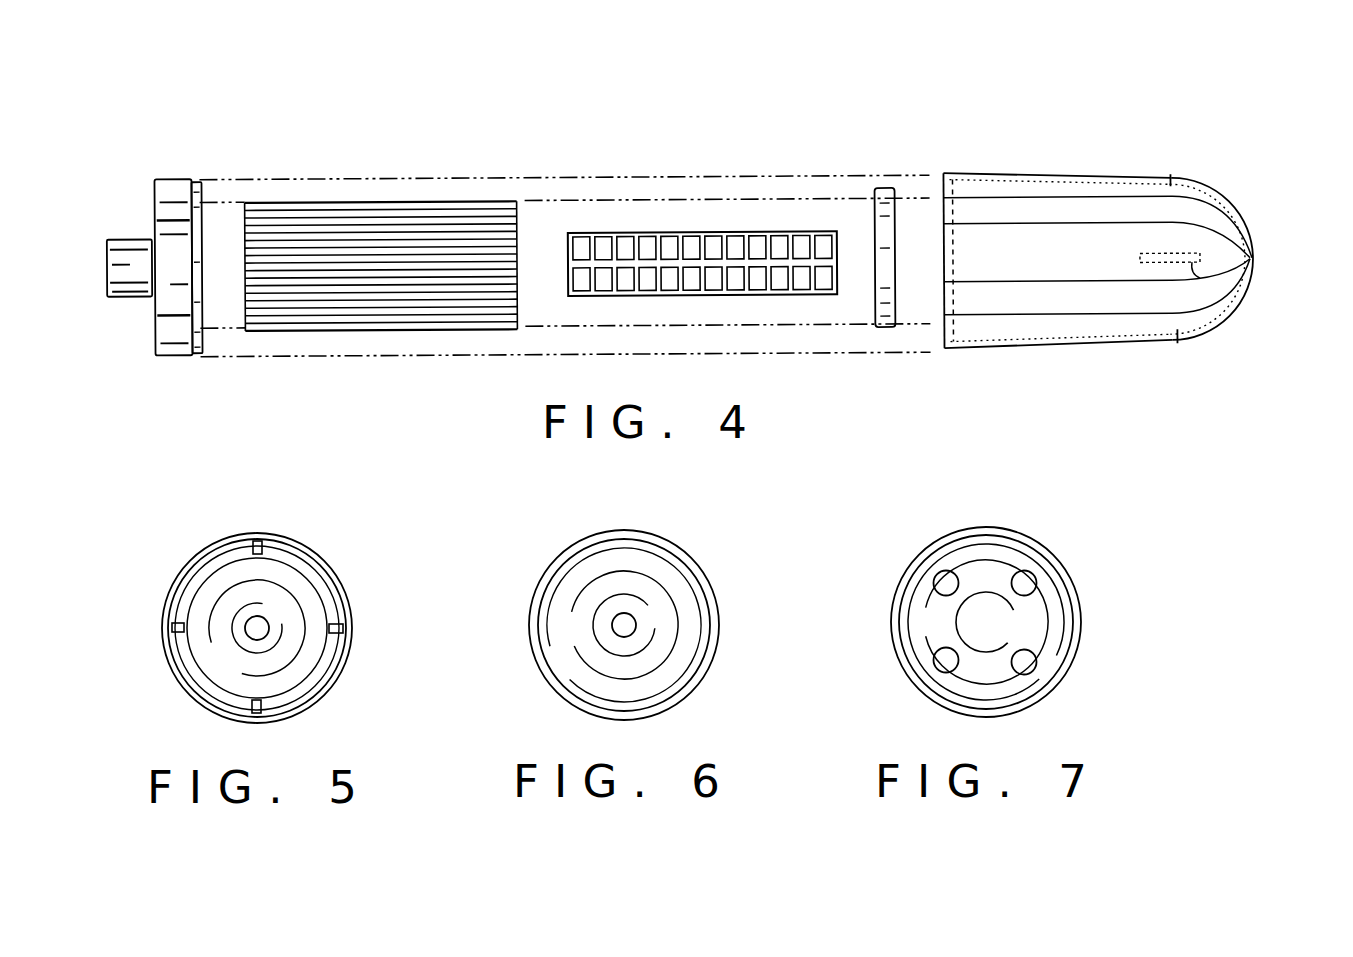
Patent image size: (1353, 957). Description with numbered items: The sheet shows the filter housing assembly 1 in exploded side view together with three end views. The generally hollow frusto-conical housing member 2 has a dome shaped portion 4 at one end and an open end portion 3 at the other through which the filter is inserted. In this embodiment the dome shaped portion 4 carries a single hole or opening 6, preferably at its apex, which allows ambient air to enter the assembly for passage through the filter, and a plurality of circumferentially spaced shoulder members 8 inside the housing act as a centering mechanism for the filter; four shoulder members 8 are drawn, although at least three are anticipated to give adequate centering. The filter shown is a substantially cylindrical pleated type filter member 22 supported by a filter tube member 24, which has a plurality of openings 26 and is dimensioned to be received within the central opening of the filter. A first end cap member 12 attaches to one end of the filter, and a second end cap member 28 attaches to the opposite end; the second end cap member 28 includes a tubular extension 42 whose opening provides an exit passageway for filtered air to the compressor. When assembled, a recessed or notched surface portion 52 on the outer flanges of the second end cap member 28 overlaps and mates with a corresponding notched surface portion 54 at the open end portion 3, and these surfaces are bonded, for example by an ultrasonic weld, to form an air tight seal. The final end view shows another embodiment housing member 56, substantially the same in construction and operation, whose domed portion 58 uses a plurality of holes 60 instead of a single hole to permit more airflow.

In FIG. 4, the filter housing assembly 1 is at (800, 128).
In FIG. 4, the housing member 2 is at (1087, 174).
In FIG. 5, the housing member 2 is at (307, 535).
In FIG. 6, the housing member 2 is at (666, 535).
In FIG. 4, the open end portion 3 is at (942, 292).
In FIG. 4, the dome shaped portion 4 is at (1237, 218).
In FIG. 6, the dome shaped portion 4 is at (676, 680).
In FIG. 4, the single hole or opening 6 is at (1252, 258).
In FIG. 5, the single hole or opening 6 is at (262, 625).
In FIG. 6, the single hole or opening 6 is at (628, 624).
In FIG. 4, the shoulder members 8 is at (1183, 168).
In FIG. 5, the shoulder members 8 is at (243, 548).
In FIG. 4, the first end cap member 12 is at (897, 177).
In FIG. 4, the pleated type filter member 22 is at (405, 200).
In FIG. 4, the filter tube member 24 is at (677, 228).
In FIG. 4, the openings 26 is at (600, 245).
In FIG. 4, the second end cap member 28 is at (178, 360).
In FIG. 4, the tubular extension 42 is at (120, 238).
In FIG. 4, the recessed or notched surface portion 52 is at (197, 178).
In FIG. 4, the recessed or notched surface portion 54 is at (953, 252).
In FIG. 7, the housing member 56 is at (1018, 524).
In FIG. 7, the domed portion 58 is at (1050, 640).
In FIG. 7, the holes 60 is at (940, 576).